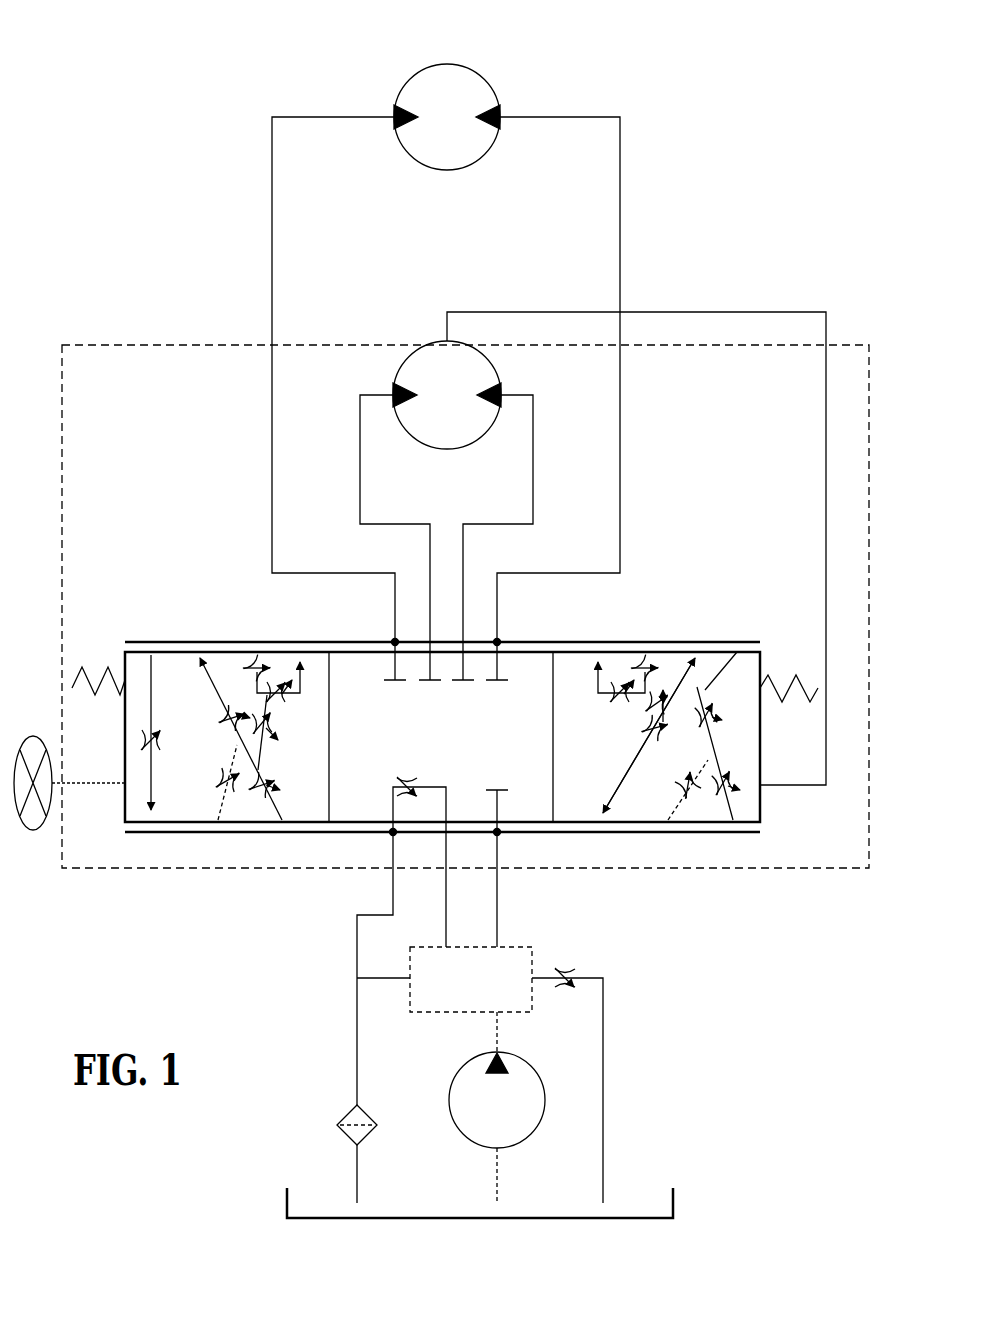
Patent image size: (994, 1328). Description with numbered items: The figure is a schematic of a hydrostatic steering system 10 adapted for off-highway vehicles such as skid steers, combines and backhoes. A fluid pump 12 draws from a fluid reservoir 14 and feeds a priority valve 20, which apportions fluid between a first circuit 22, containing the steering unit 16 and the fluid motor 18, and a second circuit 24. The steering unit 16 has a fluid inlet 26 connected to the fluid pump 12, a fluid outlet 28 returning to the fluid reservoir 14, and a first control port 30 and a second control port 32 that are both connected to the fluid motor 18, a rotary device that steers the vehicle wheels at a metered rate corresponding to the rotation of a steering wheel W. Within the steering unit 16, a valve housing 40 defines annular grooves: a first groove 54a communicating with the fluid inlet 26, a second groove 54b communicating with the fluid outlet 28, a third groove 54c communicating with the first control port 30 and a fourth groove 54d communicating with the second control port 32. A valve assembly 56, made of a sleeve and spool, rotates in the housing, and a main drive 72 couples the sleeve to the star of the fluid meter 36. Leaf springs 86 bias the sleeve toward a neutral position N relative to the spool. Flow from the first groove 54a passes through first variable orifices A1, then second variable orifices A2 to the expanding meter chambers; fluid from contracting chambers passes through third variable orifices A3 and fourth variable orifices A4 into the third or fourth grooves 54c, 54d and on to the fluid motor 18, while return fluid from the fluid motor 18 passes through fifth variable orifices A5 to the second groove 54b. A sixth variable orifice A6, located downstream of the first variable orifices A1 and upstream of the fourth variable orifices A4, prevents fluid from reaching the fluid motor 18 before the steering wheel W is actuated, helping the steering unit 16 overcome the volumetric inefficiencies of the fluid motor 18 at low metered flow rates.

The steering system 10 is at (178, 122).
The fluid pump 12 is at (458, 1132).
The fluid reservoir 14 is at (673, 1202).
The steering unit 16 is at (770, 874).
The fluid motor 18 is at (478, 70).
The priority valve 20 is at (432, 1012).
The first circuit 22 is at (498, 920).
The second circuit 24 is at (603, 1005).
The fluid inlet 26 is at (497, 869).
The fluid outlet 28 is at (357, 935).
The first control port 30 is at (272, 266).
The second control port 32 is at (620, 266).
The fluid meter 36 is at (404, 361).
The valve housing 40 is at (202, 640).
The first groove 54a is at (498, 834).
The second groove 54b is at (392, 834).
The third groove 54c is at (396, 640).
The fourth groove 54d is at (496, 640).
The valve assembly 56 is at (715, 610).
The main drive 72 is at (828, 330).
The leaf springs 86 is at (88, 670).
The neutral position N is at (522, 650).
The steering wheel W is at (36, 830).
The first variable orifices A1 is at (268, 778).
The second variable orifices A2 is at (245, 720).
The third variable orifices A3 is at (262, 668).
The fourth variable orifices A4 is at (283, 697).
The fifth variable orifices A5 is at (163, 745).
The sixth variable orifice A6 is at (270, 724).